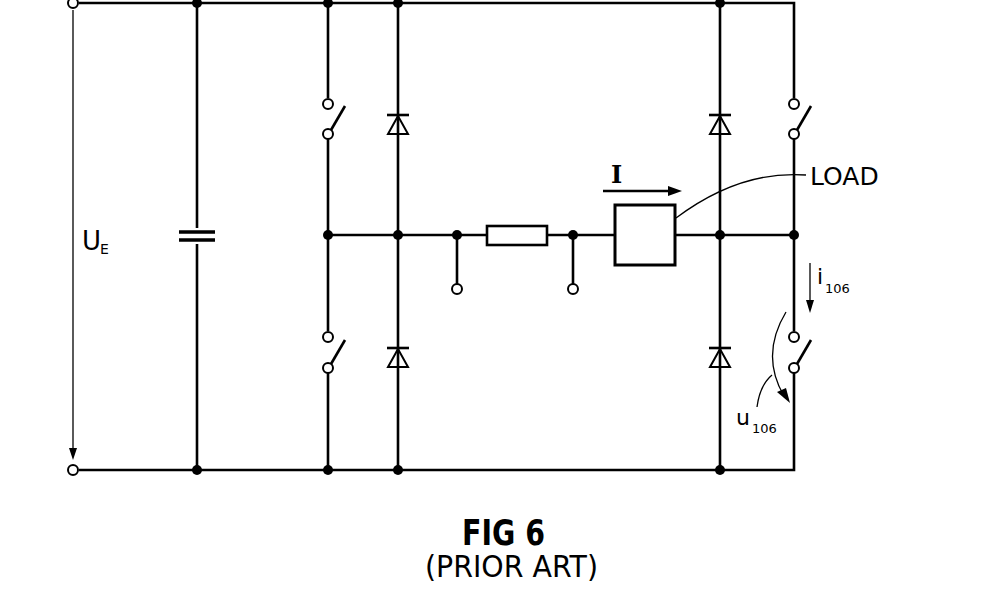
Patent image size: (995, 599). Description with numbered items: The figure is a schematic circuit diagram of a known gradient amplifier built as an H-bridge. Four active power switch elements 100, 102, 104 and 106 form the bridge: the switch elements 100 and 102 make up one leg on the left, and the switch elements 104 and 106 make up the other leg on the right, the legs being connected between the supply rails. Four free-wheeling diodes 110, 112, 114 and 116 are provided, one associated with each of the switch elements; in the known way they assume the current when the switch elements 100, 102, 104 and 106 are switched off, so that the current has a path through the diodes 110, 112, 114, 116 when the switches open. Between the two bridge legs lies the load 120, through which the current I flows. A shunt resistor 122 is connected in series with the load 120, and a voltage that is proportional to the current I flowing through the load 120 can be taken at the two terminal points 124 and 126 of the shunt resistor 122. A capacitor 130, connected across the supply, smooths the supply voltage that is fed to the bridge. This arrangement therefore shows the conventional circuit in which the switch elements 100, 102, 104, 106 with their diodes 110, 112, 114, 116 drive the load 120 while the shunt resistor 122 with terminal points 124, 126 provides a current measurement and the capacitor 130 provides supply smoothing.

The active power switch element 100 is at (340, 112).
The active power switch element 102 is at (343, 344).
The active power switch element 104 is at (810, 115).
The active power switch element 106 is at (810, 350).
The free-wheeling diode 110 is at (410, 128).
The free-wheeling diode 112 is at (410, 357).
The free-wheeling diode 114 is at (710, 120).
The free-wheeling diode 116 is at (710, 355).
The load 120 is at (645, 266).
The shunt resistor 122 is at (515, 226).
The terminal point 124 is at (457, 295).
The terminal point 126 is at (573, 295).
The capacitor 130 is at (215, 243).